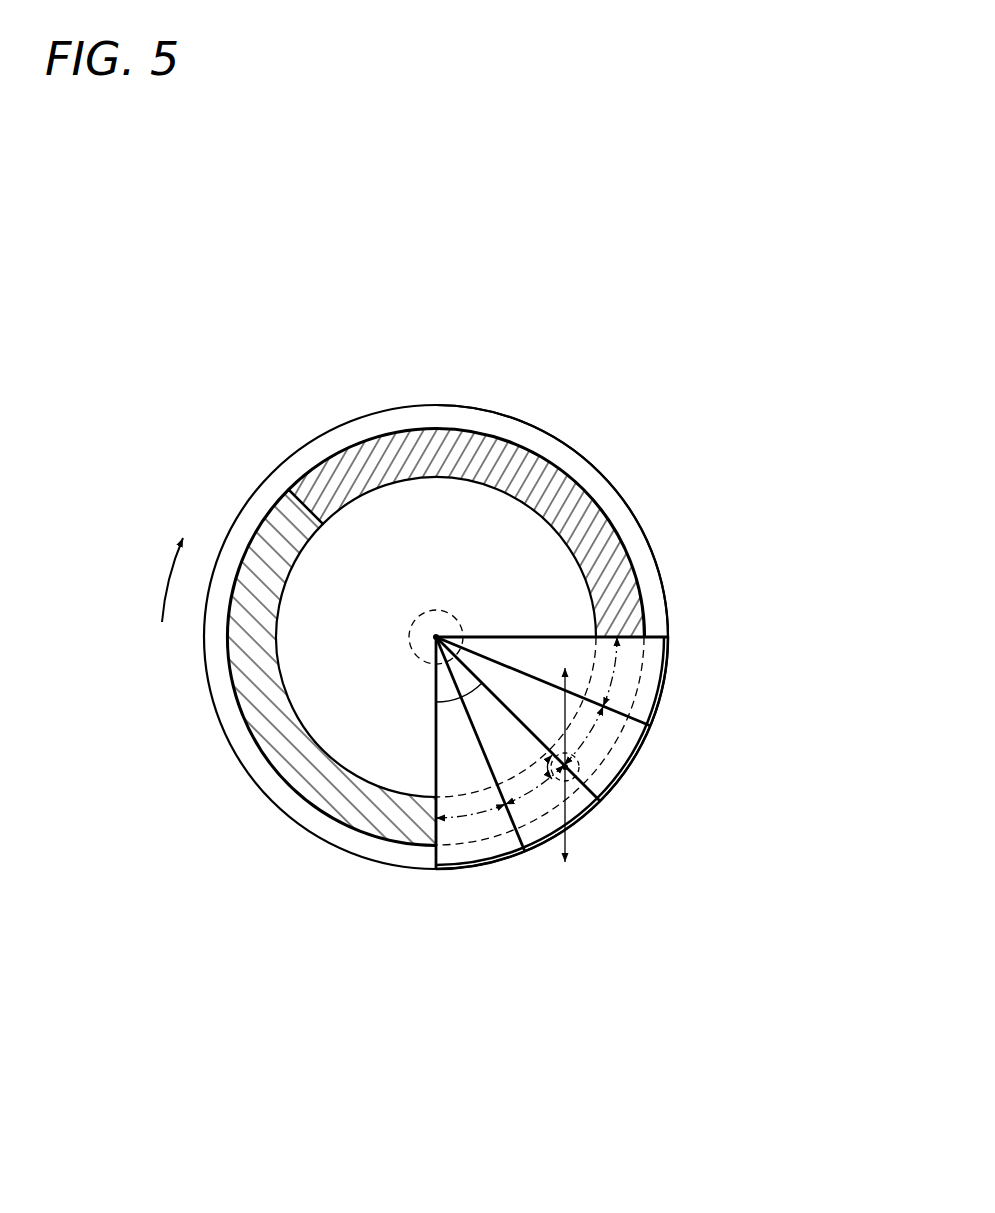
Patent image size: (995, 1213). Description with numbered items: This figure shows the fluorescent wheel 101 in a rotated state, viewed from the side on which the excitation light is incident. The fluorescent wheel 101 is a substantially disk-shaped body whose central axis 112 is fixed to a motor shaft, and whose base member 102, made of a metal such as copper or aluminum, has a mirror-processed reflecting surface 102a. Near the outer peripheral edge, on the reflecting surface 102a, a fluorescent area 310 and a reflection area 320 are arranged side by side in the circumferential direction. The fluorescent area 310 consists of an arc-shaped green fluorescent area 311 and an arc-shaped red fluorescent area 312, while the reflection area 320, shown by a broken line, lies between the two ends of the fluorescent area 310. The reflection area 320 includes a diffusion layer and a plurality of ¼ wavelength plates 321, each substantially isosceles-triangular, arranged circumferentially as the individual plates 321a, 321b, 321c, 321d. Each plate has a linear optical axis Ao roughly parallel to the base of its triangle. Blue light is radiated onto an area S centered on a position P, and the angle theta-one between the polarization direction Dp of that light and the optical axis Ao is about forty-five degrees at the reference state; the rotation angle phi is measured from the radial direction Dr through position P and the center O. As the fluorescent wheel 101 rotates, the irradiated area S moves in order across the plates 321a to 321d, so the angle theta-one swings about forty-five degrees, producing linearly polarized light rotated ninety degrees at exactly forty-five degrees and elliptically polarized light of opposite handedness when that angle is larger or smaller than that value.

The fluorescent wheel 101 is at (619, 419).
The base member 102 is at (482, 625).
The reflecting surface 102a is at (627, 523).
The central axis 112 is at (437, 610).
The fluorescent area 310 is at (387, 581).
The green fluorescent area 311 is at (382, 463).
The red fluorescent area 312 is at (278, 723).
The reflection area 320 is at (603, 758).
The ¼ wavelength plate 321 is at (542, 756).
The ¼ wavelength plate 321a is at (453, 723).
The ¼ wavelength plate 321b is at (487, 722).
The ¼ wavelength plate 321c is at (490, 668).
The ¼ wavelength plate 321d is at (517, 652).
The center O is at (436, 637).
The position P is at (568, 769).
The area S is at (580, 795).
The radial direction Dr is at (601, 800).
The polarization direction Dp is at (565, 783).
The optical axis Ao is at (612, 670).